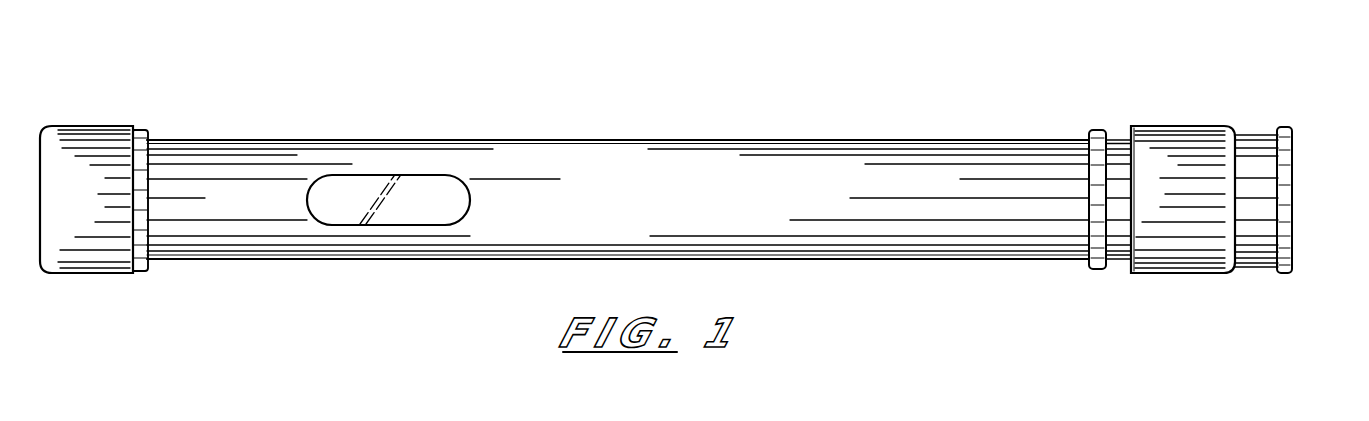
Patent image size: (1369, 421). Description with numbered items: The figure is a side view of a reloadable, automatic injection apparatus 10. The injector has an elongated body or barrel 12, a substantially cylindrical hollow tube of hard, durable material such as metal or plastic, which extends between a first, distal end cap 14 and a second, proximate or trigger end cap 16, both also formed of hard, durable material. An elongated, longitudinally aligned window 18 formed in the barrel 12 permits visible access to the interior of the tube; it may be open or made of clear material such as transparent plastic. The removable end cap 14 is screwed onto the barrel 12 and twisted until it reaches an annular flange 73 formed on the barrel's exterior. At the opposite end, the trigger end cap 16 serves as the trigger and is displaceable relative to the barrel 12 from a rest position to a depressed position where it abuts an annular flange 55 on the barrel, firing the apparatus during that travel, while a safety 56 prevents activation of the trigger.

The reloadable, automatic injection apparatus 10 is at (752, 82).
The barrel 12 is at (510, 140).
The end cap 14 is at (95, 125).
The trigger end cap 16 is at (1168, 128).
The window 18 is at (412, 210).
The annular flange 55 is at (1097, 268).
The safety 56 is at (1293, 195).
The annular flange 73 is at (140, 272).